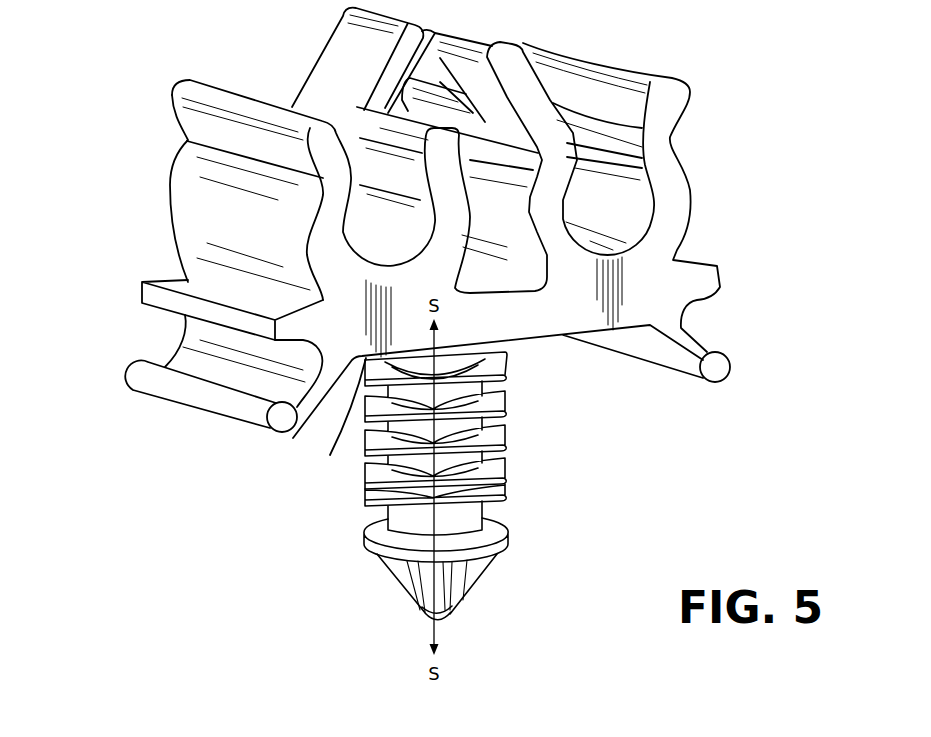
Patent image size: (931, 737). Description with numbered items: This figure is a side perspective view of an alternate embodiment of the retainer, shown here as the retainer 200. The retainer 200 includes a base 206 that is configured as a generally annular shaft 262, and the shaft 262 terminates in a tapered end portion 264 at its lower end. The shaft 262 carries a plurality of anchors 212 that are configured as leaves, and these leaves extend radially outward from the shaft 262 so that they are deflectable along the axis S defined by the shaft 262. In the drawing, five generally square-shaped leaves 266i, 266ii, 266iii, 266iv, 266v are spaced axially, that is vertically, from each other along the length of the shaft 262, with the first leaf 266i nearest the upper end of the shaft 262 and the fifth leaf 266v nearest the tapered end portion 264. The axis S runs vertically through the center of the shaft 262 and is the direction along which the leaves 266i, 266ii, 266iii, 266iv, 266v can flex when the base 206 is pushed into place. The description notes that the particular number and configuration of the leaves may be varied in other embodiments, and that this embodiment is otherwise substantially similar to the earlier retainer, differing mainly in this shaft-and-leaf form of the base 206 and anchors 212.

The retainer 200 is at (758, 113).
The base 206 is at (576, 482).
The anchors 212 is at (530, 432).
The shaft 262 is at (421, 519).
The tapered end portion 264 is at (391, 585).
The leaf 266i is at (405, 359).
The leaf 266ii is at (364, 412).
The leaf 266iii is at (364, 447).
The leaf 266iv is at (364, 480).
The leaf 266v is at (366, 500).